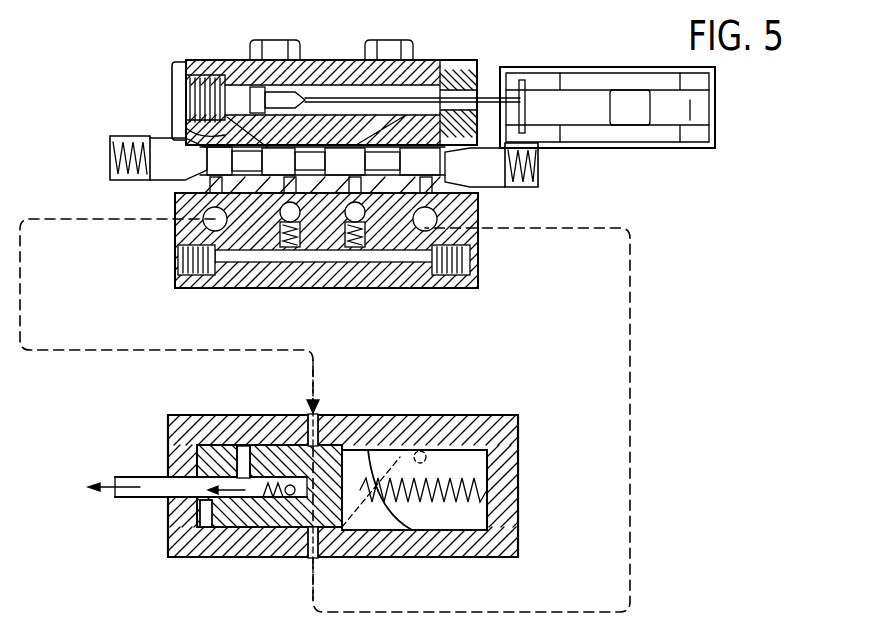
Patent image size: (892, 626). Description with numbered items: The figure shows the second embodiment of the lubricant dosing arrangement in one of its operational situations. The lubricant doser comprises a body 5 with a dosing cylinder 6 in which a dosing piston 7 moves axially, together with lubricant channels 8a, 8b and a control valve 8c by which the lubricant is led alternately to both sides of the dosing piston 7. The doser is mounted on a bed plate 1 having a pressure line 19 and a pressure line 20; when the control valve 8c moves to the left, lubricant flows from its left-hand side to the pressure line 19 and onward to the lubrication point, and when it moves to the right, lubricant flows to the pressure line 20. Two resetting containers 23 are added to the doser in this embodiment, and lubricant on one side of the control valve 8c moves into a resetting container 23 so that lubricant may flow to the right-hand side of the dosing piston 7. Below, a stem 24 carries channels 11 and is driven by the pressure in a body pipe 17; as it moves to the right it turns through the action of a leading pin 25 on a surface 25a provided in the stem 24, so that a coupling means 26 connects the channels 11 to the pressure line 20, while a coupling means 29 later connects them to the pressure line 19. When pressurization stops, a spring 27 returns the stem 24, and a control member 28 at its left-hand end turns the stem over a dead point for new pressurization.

The bed plate 1 is at (321, 258).
The body 5 is at (350, 67).
The dosing cylinder 6 is at (317, 90).
The dosing piston 7 is at (252, 88).
The lubricant channel 8a is at (190, 132).
The lubricant channel 8b is at (418, 127).
The control valve 8c is at (330, 200).
The channels 11 is at (229, 445).
The body pipe 17 is at (124, 483).
The pressure line 19 is at (223, 208).
The pressure line 20 is at (453, 218).
The resetting container 23 is at (172, 150).
The stem 24 is at (303, 480).
The leading pin 25 is at (432, 458).
The surface 25a is at (398, 462).
The coupling means 26 is at (320, 547).
The spring 27 is at (462, 503).
The control member 28 is at (207, 527).
The coupling means 29 is at (318, 432).